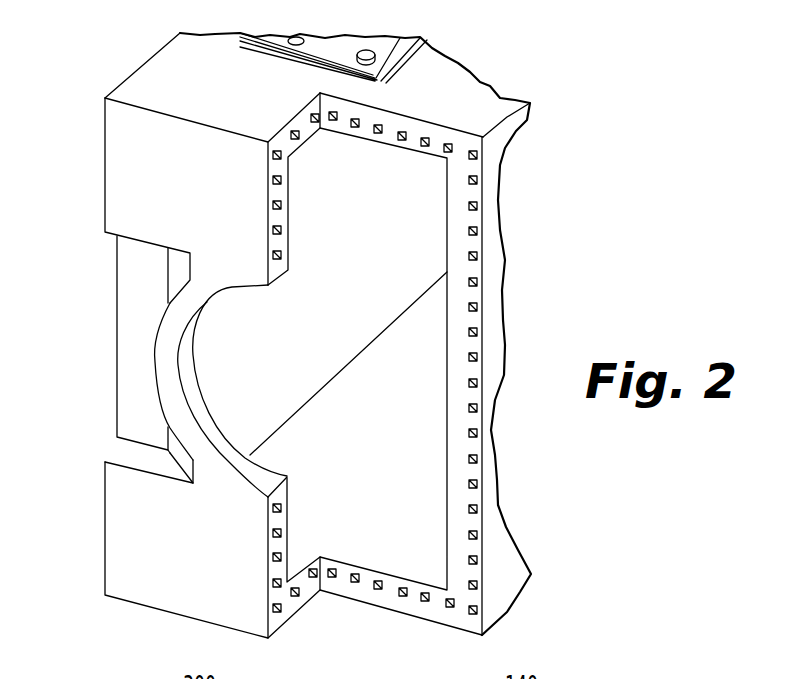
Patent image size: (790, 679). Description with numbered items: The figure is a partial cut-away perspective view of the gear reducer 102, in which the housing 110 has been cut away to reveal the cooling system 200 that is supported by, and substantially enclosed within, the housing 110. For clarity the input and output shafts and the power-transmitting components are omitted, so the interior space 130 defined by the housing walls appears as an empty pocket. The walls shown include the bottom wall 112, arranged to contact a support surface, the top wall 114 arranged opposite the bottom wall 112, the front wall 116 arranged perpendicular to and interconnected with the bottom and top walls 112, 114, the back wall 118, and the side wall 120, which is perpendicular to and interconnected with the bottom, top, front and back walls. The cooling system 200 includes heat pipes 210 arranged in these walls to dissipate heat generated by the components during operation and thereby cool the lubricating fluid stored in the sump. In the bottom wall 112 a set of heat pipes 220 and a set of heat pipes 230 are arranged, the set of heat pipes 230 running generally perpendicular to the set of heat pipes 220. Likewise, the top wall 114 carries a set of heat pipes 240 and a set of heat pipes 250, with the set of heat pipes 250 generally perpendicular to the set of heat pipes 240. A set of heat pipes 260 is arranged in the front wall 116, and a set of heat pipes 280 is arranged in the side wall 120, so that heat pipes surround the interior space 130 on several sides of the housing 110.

The gear reducer 102 is at (497, 101).
The housing 110 is at (402, 40).
The bottom wall 112 is at (458, 633).
The top wall 114 is at (437, 140).
The front wall 116 is at (455, 308).
The back wall 118 is at (132, 243).
The side wall 120 is at (268, 205).
The interior space 130 is at (392, 210).
The cooling system 200 is at (421, 128).
The heat pipes 210 is at (490, 433).
The set of heat pipes 220 is at (398, 586).
The set of heat pipes 230 is at (296, 605).
The set of heat pipes 240 is at (355, 117).
The set of heat pipes 250 is at (296, 128).
The set of heat pipes 260 is at (480, 238).
The set of heat pipes 280 is at (287, 237).